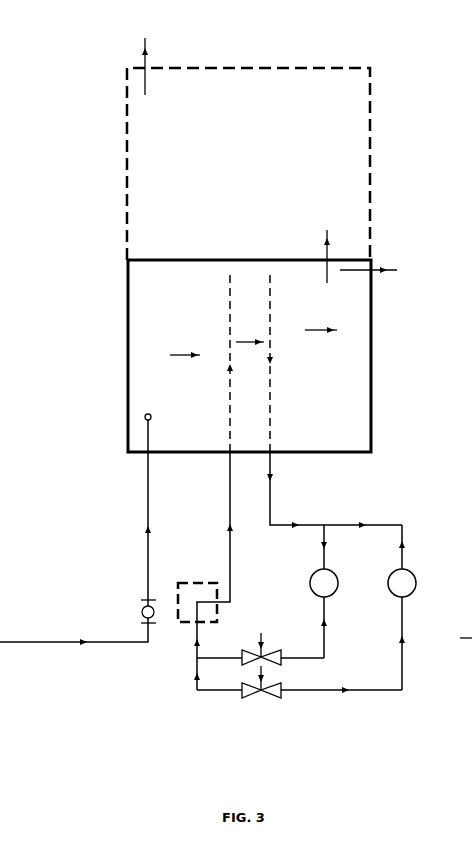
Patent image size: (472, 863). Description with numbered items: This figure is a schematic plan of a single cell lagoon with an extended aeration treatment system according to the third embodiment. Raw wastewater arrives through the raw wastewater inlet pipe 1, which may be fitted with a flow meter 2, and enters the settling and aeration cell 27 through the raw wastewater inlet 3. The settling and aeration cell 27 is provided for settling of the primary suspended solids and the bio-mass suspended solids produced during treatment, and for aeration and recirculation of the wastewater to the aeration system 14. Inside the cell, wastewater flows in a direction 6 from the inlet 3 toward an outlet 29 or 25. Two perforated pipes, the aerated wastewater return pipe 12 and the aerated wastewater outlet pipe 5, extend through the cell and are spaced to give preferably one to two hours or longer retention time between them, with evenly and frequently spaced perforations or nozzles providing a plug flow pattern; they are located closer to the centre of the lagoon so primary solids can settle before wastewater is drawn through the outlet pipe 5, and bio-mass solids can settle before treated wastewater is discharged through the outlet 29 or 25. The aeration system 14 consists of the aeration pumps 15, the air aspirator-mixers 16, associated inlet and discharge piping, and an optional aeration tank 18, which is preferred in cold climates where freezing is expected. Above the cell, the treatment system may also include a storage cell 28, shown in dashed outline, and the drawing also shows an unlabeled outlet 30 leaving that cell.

The raw wastewater inlet pipe 1 is at (144, 471).
The flow meter 2 is at (143, 606).
The raw wastewater inlet 3 is at (142, 420).
The aerated wastewater outlet pipe 5 is at (271, 412).
The wastewater flow direction 6 is at (183, 355).
The aerated wastewater return pipe 12 is at (228, 412).
The aeration system 14 is at (208, 717).
The aeration pumps 15 is at (335, 573).
The air aspirator-mixers 16 is at (283, 661).
The aeration tank 18 is at (197, 581).
The outlet 25 is at (379, 270).
The settling and aeration cell 27 is at (143, 301).
The storage cell 28 is at (145, 150).
The outlet 29 is at (328, 247).
The exhaust outlet 30 is at (146, 57).